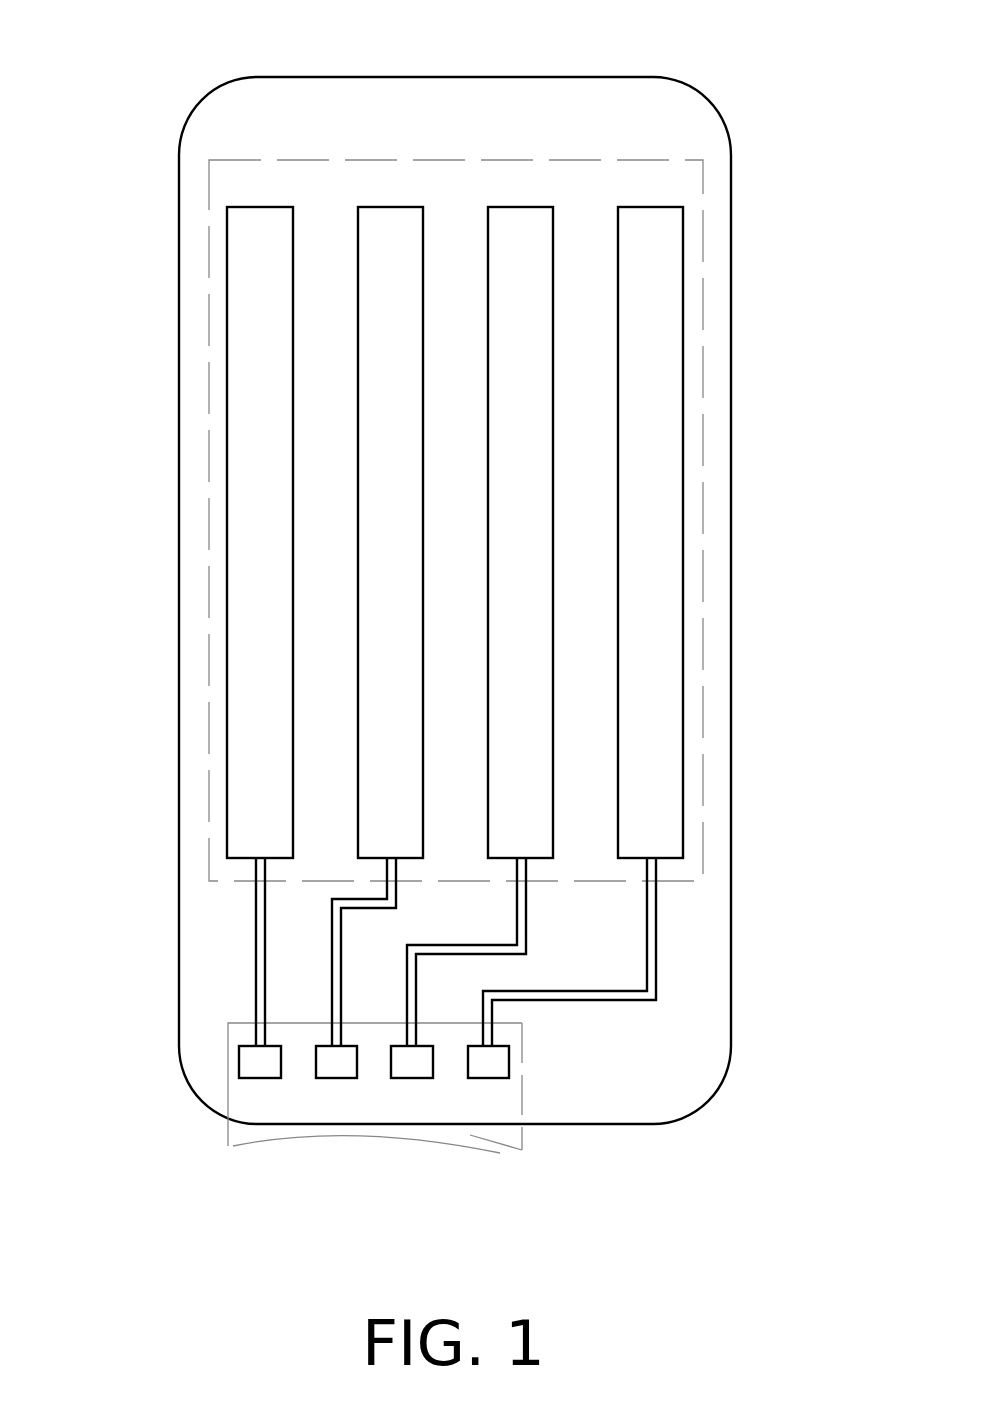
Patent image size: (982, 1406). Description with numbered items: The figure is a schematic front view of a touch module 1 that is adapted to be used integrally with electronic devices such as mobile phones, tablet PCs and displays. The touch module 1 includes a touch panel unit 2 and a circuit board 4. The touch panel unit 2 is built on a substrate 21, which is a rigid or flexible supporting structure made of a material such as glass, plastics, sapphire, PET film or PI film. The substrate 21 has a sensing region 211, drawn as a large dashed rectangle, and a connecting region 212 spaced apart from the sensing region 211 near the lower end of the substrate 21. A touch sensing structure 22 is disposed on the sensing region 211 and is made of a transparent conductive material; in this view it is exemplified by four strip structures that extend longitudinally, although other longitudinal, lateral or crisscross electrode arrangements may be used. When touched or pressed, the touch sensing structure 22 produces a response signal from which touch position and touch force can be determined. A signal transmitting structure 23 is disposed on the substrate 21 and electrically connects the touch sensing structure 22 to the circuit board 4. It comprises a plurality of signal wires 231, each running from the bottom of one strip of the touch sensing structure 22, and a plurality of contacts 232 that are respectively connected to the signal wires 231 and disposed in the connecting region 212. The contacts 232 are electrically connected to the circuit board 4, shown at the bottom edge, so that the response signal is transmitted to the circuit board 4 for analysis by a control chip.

The touch module 1 is at (126, 44).
The touch panel unit 2 is at (163, 548).
The substrate 21 is at (697, 987).
The sensing region 211 is at (692, 250).
The connecting region 212 is at (263, 1090).
The touch sensing structure 22 is at (637, 220).
The signal transmitting structure 23 is at (107, 912).
The signal wires 231 is at (336, 913).
The contacts 232 is at (327, 1053).
The circuit board 4 is at (522, 1150).